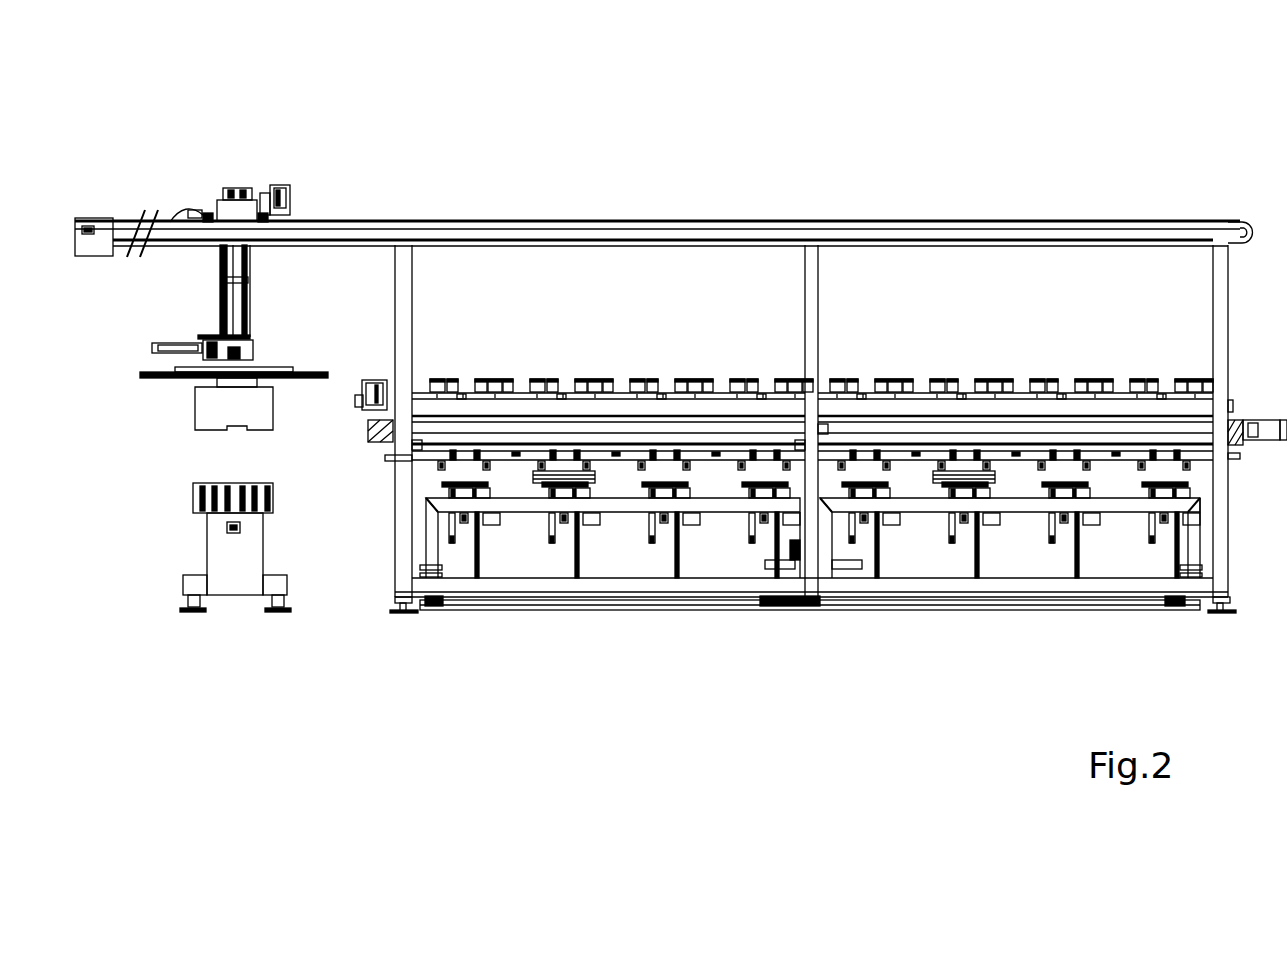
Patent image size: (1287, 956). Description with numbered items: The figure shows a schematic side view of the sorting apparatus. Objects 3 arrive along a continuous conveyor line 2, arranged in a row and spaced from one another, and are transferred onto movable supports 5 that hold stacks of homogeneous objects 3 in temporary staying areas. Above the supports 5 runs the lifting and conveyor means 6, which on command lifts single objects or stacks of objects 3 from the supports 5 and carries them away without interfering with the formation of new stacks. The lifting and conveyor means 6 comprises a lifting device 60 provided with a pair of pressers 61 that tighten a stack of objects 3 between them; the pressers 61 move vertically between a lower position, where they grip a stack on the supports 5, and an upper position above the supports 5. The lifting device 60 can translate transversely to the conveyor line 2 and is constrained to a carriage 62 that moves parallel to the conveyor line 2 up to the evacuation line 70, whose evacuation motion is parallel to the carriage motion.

The conveyor line 2 is at (1263, 405).
The objects 3 is at (532, 478).
The movable support 5 is at (458, 470).
The lifting and conveyor means 6 is at (296, 167).
The lifting device 60 is at (251, 300).
The pressers 61 is at (227, 410).
The carriage 62 is at (240, 188).
The evacuation line 70 is at (246, 472).